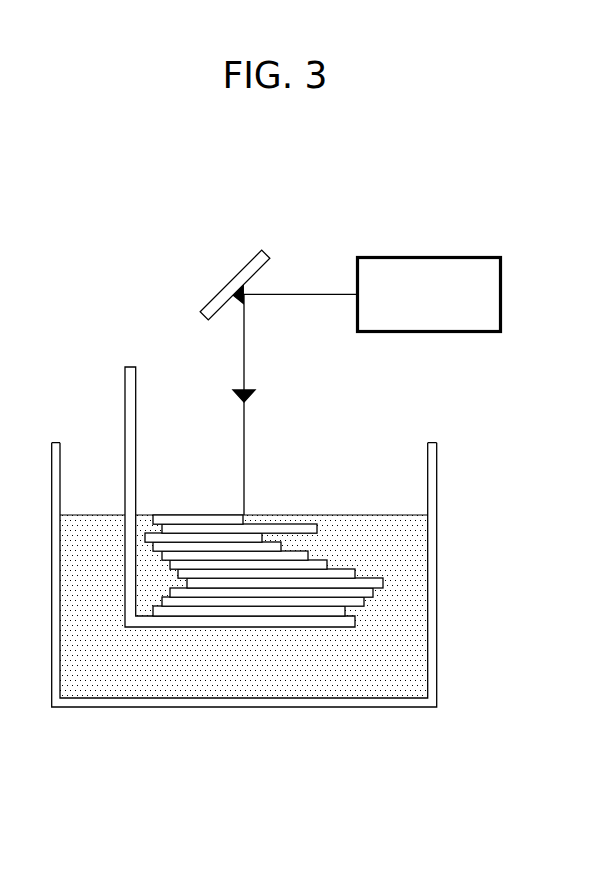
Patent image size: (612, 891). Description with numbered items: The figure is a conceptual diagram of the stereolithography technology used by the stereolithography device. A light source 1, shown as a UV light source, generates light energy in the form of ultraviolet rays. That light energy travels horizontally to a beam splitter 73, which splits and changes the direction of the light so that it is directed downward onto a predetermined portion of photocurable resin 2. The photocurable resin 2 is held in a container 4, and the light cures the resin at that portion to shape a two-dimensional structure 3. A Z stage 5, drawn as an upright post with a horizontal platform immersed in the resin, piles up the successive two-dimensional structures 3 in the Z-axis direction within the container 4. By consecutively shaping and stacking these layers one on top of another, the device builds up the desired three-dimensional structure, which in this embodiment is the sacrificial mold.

The light source 1 is at (440, 256).
The photocurable resin 2 is at (408, 555).
The 2D structure 3 is at (208, 520).
The container 4 is at (437, 603).
The Z stage 5 is at (127, 385).
The beam splitter 73 is at (210, 300).